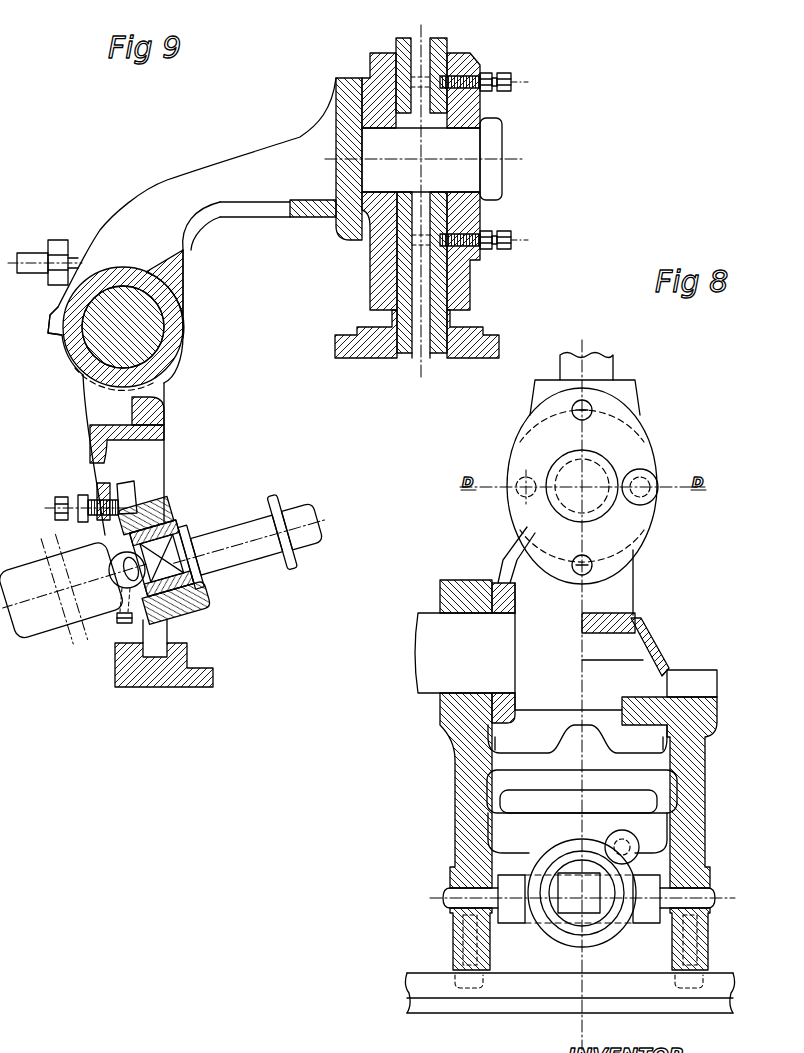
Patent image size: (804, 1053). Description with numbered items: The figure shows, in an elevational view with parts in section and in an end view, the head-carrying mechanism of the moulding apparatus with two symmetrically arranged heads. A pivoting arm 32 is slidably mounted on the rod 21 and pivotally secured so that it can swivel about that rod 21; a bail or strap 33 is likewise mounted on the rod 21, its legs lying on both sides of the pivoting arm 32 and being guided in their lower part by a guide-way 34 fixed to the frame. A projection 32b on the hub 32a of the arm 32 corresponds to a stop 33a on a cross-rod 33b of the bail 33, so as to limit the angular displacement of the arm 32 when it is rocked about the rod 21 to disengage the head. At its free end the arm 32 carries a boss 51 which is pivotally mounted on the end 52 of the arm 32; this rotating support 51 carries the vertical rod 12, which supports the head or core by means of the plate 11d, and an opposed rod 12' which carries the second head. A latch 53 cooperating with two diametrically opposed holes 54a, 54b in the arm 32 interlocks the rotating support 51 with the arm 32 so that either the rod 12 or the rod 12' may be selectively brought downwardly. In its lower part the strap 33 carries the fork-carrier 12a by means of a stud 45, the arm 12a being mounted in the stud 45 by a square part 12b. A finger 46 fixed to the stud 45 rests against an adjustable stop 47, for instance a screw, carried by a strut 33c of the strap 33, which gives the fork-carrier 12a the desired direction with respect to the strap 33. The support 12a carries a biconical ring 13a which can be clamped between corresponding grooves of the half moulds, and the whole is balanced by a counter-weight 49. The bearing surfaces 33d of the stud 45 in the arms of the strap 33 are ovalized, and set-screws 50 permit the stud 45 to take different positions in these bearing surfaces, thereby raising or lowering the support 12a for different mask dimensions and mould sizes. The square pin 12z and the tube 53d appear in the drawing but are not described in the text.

In FIG. 9, the plate 11d is at (362, 350).
In FIG. 8, the plate 11d is at (623, 653).
In FIG. 9, the vertical rod 12 is at (462, 272).
In FIG. 8, the vertical rod 12 is at (639, 612).
In FIG. 9, the opposed rod 12' is at (446, 65).
In FIG. 8, the opposed rod 12' is at (623, 361).
In FIG. 9, the fork-carrier 12a is at (215, 563).
In FIG. 9, the square part 12b is at (197, 593).
In FIG. 8, the square pin 12z is at (572, 908).
In FIG. 9, the biconical ring 13a is at (279, 503).
In FIG. 9, the rod 21 is at (142, 337).
In FIG. 8, the rod 21 is at (432, 661).
In FIG. 9, the pivoting arm 32 is at (238, 162).
In FIG. 8, the pivoting arm 32 is at (505, 557).
In FIG. 9, the hub 32a is at (75, 372).
In FIG. 9, the projection 32b is at (56, 331).
In FIG. 9, the bail 33 is at (147, 460).
In FIG. 8, the bail 33 is at (467, 770).
In FIG. 9, the stop 33a is at (157, 422).
In FIG. 8, the stop 33a is at (592, 747).
In FIG. 9, the cross-rod 33b is at (90, 435).
In FIG. 8, the cross-rod 33b is at (620, 780).
In FIG. 8, the strut 33c is at (657, 840).
In FIG. 8, the bearing surfaces 33d is at (458, 885).
In FIG. 9, the guide-way 34 is at (122, 674).
In FIG. 8, the guide-way 34 is at (577, 993).
In FIG. 9, the stud 45 is at (125, 580).
In FIG. 8, the stud 45 is at (513, 915).
In FIG. 9, the finger 46 is at (130, 493).
In FIG. 8, the finger 46 is at (637, 838).
In FIG. 9, the adjustable stop 47 is at (88, 497).
In FIG. 8, the adjustable stop 47 is at (631, 848).
In FIG. 9, the counter-weight 49 is at (40, 627).
In FIG. 9, the set-screws 50 is at (124, 623).
In FIG. 8, the set-screws 50 is at (460, 942).
In FIG. 9, the boss 51 is at (480, 207).
In FIG. 8, the boss 51 is at (623, 442).
In FIG. 9, the end of the arm 52 is at (452, 143).
In FIG. 8, the end of the arm 52 is at (567, 458).
In FIG. 8, the latch 53 is at (647, 478).
In FIG. 9, the tube 53d is at (43, 602).
In FIG. 8, the hole 54a is at (643, 493).
In FIG. 8, the hole 54b is at (527, 478).